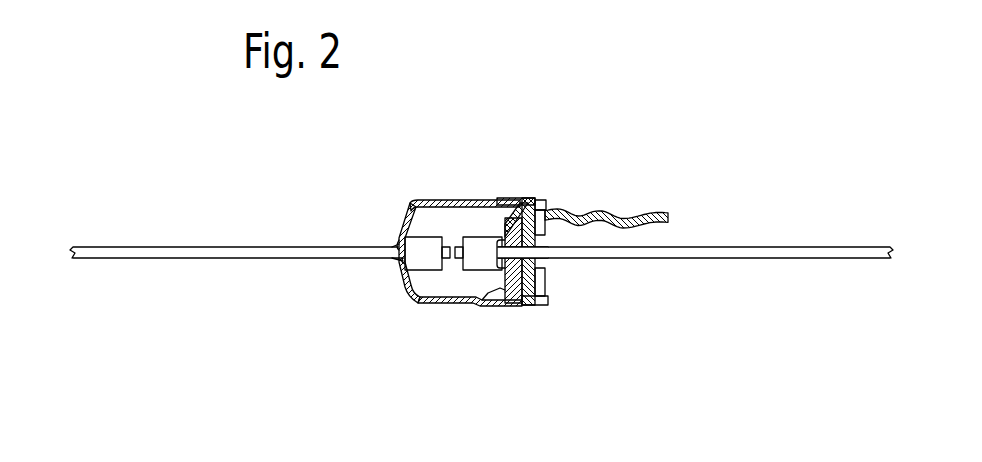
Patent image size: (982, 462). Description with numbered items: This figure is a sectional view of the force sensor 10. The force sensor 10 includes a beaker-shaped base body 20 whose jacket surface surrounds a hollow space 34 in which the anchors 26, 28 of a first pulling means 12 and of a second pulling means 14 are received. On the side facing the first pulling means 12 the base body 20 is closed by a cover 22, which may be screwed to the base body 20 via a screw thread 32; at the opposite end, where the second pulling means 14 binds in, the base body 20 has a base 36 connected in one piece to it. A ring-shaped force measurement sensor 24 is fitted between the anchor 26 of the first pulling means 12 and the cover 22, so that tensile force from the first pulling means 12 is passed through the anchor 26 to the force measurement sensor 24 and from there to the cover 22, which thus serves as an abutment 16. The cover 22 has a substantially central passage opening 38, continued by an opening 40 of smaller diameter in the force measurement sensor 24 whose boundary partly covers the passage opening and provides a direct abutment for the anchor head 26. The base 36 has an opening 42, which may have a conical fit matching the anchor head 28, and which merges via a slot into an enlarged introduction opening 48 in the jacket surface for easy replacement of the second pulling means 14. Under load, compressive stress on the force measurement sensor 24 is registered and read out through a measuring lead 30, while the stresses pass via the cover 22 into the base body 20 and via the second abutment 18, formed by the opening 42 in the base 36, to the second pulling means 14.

The force sensor 10 is at (537, 327).
The first pulling means 12 is at (803, 247).
The second pulling means 14 is at (105, 247).
The abutment 16 is at (540, 270).
The second abutment 18 is at (397, 252).
The base body 20 is at (428, 238).
The cover 22 is at (538, 203).
The force measurement sensor 24 is at (500, 287).
The anchor 26 is at (477, 237).
The anchor 28 is at (425, 258).
The measuring lead 30 is at (655, 214).
The screw thread 32 is at (527, 200).
The hollow space 34 is at (425, 220).
The base 36 is at (408, 290).
The passage opening 38 is at (513, 260).
The opening 40 is at (500, 206).
The opening 42 is at (398, 240).
The introduction opening 48 is at (452, 302).